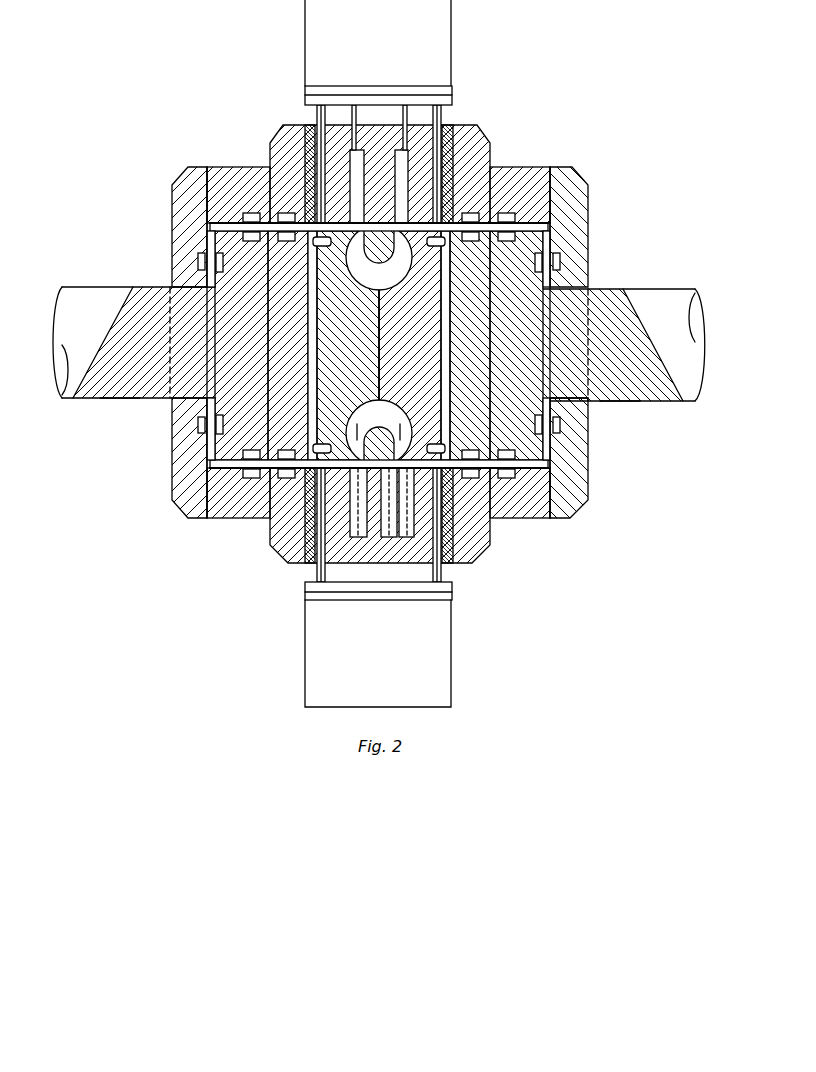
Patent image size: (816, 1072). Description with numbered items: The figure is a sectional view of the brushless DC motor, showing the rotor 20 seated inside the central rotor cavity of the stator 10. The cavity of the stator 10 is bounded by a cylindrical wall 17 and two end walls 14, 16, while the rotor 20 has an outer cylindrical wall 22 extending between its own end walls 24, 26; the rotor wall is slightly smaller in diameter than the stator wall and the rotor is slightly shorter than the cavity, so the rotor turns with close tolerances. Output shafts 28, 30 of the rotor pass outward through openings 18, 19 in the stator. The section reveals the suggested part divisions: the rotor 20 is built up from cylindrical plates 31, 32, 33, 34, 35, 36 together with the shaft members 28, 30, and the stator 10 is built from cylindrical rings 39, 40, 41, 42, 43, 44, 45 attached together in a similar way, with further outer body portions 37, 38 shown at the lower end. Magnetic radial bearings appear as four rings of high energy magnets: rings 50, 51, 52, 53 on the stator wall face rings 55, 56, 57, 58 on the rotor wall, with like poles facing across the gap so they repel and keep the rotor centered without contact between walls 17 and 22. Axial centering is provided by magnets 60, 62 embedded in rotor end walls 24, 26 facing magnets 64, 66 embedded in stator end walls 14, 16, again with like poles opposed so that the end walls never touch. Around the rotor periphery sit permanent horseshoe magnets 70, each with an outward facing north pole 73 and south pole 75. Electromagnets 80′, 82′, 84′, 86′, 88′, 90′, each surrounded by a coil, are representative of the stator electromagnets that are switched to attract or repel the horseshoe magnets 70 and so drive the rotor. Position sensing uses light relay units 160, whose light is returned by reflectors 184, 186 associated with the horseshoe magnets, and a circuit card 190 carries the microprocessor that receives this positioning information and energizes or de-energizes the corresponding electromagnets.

The stator 10 is at (392, 353).
The end wall 14 is at (208, 443).
The end wall 16 is at (551, 453).
The cylindrical wall 17 is at (222, 215).
The opening 18 is at (134, 368).
The opening 19 is at (594, 406).
The rotor 20 is at (637, 342).
The outer cylindrical wall 22 is at (555, 201).
The end wall 24 is at (208, 236).
The end wall 26 is at (547, 243).
The output shaft 28 is at (122, 398).
The output shaft 30 is at (620, 400).
The cylindrical plate 31 is at (292, 357).
The cylindrical plate 32 is at (310, 348).
The cylindrical plate 33 is at (338, 332).
The cylindrical plate 34 is at (432, 327).
The cylindrical plate 35 is at (450, 343).
The cylindrical plate 36 is at (478, 362).
The bottom end block 37 is at (190, 520).
The lower left step block 38 is at (238, 518).
The cylindrical ring 39 is at (287, 134).
The cylindrical ring 40 is at (311, 124).
The cylindrical ring 41 is at (383, 133).
The cylindrical ring 42 is at (447, 143).
The cylindrical ring 43 is at (472, 158).
The cylindrical ring 44 is at (540, 518).
The cylindrical ring 45 is at (563, 523).
The stator ring magnets 50 is at (250, 212).
The stator ring magnets 51 is at (285, 212).
The stator ring magnets 52 is at (468, 212).
The stator ring magnets 53 is at (505, 212).
The rotor ring magnets 55 is at (250, 247).
The rotor ring magnets 56 is at (286, 247).
The rotor ring magnets 57 is at (468, 247).
The rotor ring magnets 58 is at (505, 247).
The magnets 60 is at (220, 278).
The magnets 62 is at (541, 283).
The magnets 64 is at (197, 262).
The magnets 66 is at (561, 262).
The horseshoe magnet 70 is at (379, 400).
The north pole 73 is at (357, 440).
The south pole 75 is at (400, 440).
The electromagnet 80′ is at (356, 148).
The electromagnet 82′ is at (318, 573).
The electromagnet 84′ is at (358, 540).
The electromagnet 86′ is at (401, 150).
The electromagnet 88′ is at (400, 540).
The electromagnet 90′ is at (443, 575).
The light relay unit 160 is at (443, 115).
The reflector 184 is at (318, 444).
The reflector 186 is at (440, 444).
The circuit card 190 is at (432, 22).